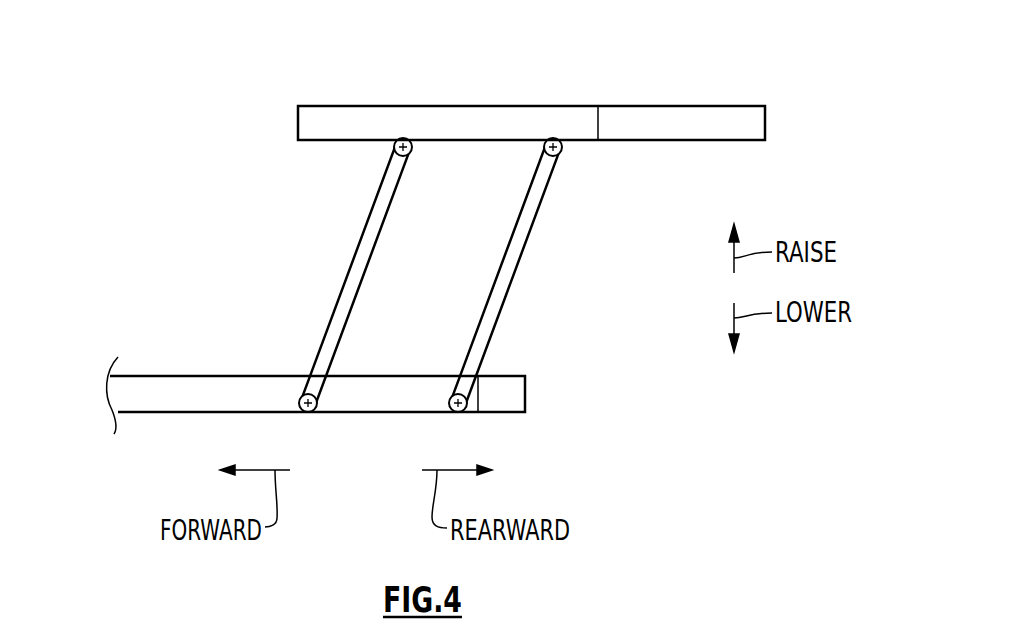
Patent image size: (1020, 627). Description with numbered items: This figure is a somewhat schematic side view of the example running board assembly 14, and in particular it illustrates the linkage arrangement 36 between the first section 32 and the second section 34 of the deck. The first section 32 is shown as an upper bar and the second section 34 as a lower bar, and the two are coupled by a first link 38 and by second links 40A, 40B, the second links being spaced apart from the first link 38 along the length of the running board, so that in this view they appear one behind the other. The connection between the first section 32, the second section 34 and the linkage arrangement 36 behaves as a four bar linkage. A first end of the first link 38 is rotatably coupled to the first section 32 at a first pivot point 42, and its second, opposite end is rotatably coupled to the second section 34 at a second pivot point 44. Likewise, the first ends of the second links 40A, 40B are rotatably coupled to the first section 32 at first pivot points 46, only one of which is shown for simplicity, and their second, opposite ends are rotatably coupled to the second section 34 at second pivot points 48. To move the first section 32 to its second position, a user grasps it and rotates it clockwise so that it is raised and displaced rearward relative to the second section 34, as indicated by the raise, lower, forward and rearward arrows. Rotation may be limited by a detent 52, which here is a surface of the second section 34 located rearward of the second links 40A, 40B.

The vehicle 14 is at (436, 264).
The first section 32 is at (554, 87).
The second section 34 is at (329, 366).
The linkage arrangement 36 is at (449, 275).
The first link 38 is at (373, 228).
The second link 40A is at (527, 228).
The second link 40B is at (553, 274).
The first pivot point 42 is at (396, 150).
The second pivot point 44 is at (302, 397).
The first pivot point 46 is at (560, 152).
The second pivot point 48 is at (451, 397).
The detent 52 is at (478, 392).